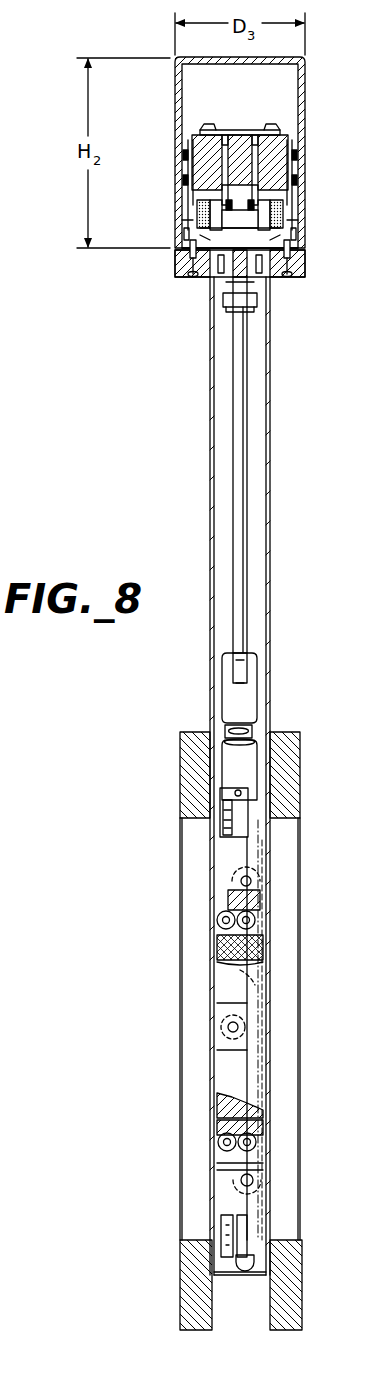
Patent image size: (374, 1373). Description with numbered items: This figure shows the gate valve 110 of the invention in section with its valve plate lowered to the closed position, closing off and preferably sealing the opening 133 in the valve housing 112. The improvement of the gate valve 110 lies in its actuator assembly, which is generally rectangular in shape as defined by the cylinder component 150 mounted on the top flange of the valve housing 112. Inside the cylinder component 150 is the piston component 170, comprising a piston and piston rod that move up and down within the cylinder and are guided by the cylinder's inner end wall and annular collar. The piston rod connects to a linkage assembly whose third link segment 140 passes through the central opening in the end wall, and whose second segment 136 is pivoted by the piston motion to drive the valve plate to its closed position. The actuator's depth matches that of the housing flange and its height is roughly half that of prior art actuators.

The gate valve 110 is at (150, 50).
The cylinder component 150 is at (285, 57).
The piston component 170 is at (213, 143).
The third link segment 140 is at (250, 286).
The second segment 136 is at (237, 473).
The valve housing 112 is at (210, 700).
The opening 133 is at (180, 960).